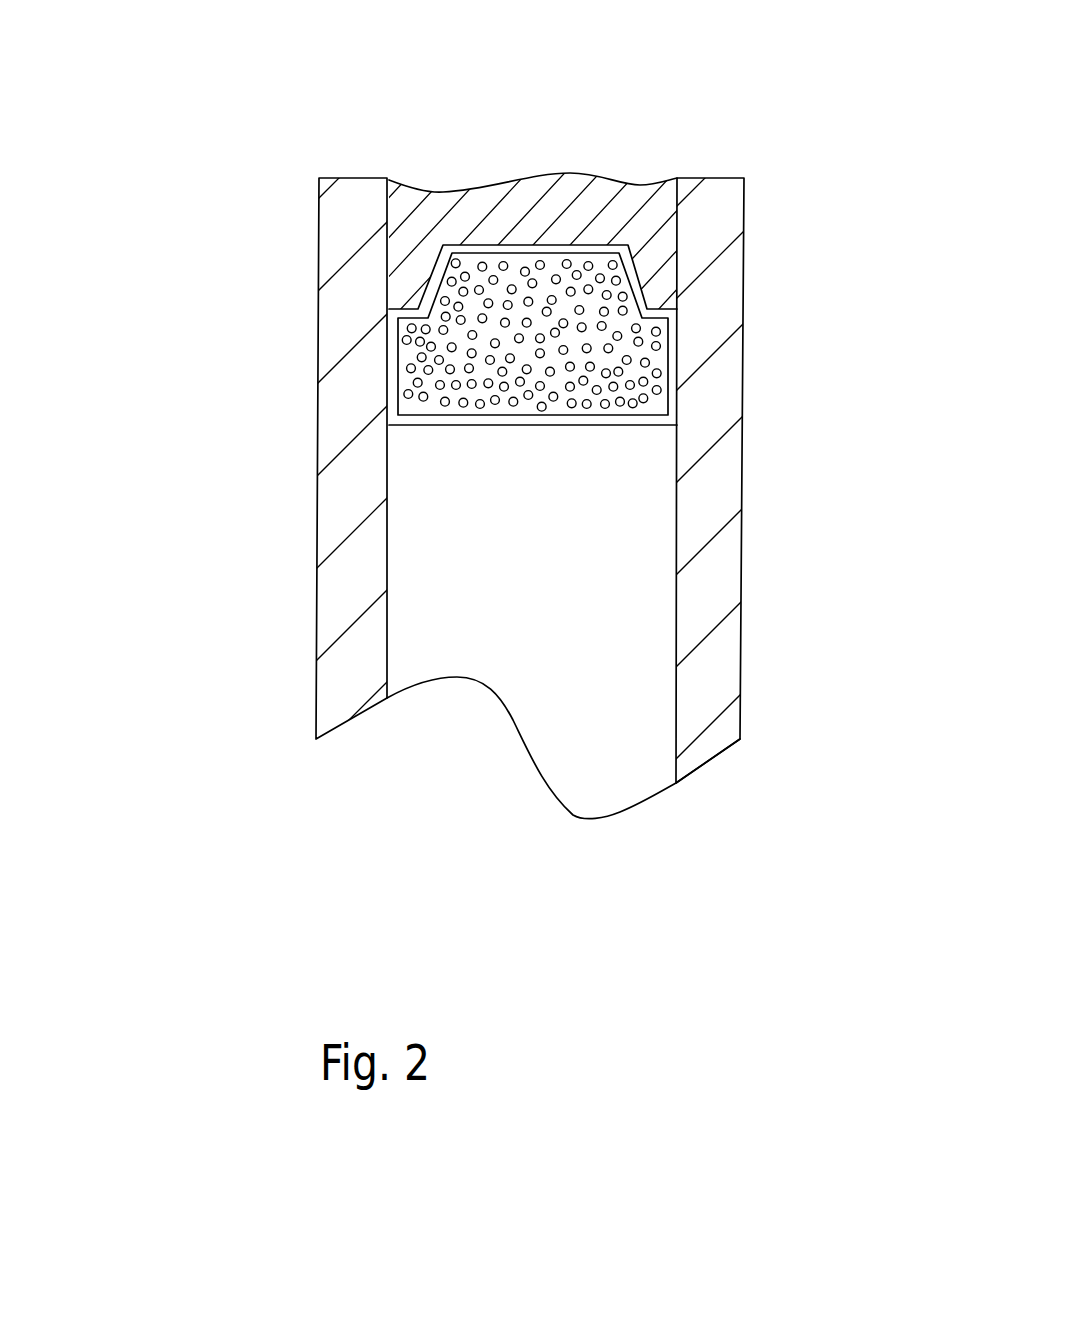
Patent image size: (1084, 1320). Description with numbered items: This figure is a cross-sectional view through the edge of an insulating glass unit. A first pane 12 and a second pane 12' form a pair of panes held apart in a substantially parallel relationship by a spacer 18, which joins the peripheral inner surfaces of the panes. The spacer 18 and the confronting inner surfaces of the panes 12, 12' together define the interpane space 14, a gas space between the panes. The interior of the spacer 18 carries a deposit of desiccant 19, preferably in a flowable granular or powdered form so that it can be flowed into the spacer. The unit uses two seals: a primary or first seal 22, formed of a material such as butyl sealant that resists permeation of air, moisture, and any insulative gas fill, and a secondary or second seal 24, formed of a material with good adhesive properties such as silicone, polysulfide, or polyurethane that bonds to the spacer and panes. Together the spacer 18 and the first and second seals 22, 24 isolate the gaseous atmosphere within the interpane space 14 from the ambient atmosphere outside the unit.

The first pane 12 is at (291, 443).
The second pane 12' is at (769, 453).
The interpane space 14 is at (440, 548).
The spacer 18 is at (442, 252).
The desiccant 19 is at (578, 302).
The first seal 22 is at (387, 344).
The second seal 24 is at (545, 200).